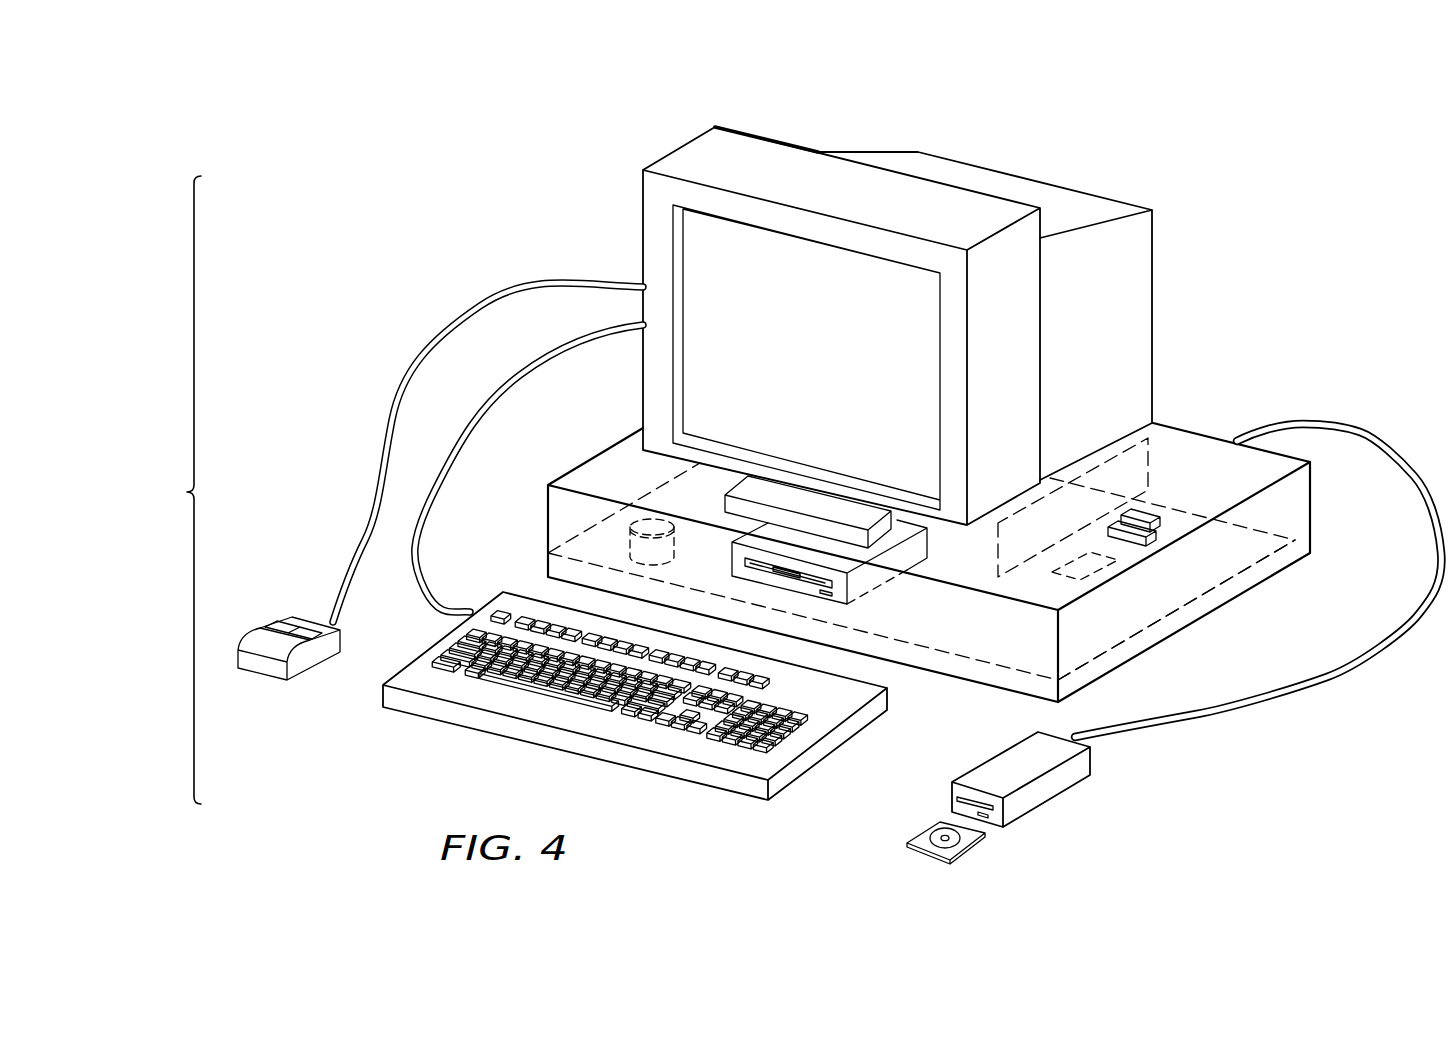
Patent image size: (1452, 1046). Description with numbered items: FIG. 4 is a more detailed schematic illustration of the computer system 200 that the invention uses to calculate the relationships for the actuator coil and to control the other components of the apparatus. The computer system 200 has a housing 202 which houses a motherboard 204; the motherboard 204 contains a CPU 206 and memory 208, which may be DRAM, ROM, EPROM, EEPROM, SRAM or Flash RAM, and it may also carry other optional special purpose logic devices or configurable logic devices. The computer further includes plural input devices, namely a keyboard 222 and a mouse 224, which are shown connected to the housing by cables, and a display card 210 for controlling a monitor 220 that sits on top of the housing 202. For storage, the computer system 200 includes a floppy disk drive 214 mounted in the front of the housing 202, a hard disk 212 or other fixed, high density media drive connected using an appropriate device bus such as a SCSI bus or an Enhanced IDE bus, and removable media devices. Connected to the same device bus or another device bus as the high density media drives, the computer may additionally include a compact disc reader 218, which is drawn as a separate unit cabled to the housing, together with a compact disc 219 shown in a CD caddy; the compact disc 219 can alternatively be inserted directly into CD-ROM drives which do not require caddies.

The computer system 200 is at (172, 490).
The housing 202 is at (1190, 437).
The motherboard 204 is at (1252, 565).
The CPU 206 is at (1083, 568).
The memory 208 is at (1152, 533).
The display card 210 is at (1135, 442).
The hard disk 212 is at (637, 545).
The floppy disk drive 214 is at (850, 596).
The compact disc reader 218 is at (1002, 762).
The compact disc 219 is at (958, 835).
The monitor 220 is at (990, 178).
The keyboard 222 is at (827, 750).
The mouse 224 is at (267, 621).